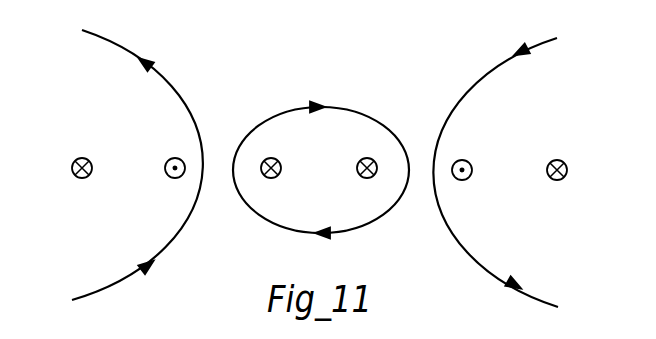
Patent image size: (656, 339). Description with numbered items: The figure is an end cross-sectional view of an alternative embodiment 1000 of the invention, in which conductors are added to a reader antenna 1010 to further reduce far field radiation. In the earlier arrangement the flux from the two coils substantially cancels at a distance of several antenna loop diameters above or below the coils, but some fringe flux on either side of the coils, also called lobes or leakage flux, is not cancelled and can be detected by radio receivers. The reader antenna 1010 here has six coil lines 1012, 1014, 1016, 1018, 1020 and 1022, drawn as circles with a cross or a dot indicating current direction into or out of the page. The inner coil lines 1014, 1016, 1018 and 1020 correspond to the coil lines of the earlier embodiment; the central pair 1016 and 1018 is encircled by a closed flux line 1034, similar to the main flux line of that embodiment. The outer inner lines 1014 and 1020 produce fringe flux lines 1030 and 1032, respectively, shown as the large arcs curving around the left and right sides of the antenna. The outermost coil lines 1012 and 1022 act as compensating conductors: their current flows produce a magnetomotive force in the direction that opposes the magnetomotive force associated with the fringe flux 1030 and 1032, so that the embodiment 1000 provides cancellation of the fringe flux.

The alternative embodiment 1000 is at (122, 207).
The reader antenna 1010 is at (532, 212).
The coil line 1012 is at (75, 158).
The coil line 1014 is at (176, 158).
The coil line 1016 is at (281, 171).
The coil line 1018 is at (363, 158).
The coil line 1020 is at (469, 163).
The coil line 1022 is at (565, 163).
The fringe flux line 1030 is at (197, 81).
The fringe flux line 1032 is at (474, 90).
The flux line 1034 is at (336, 88).